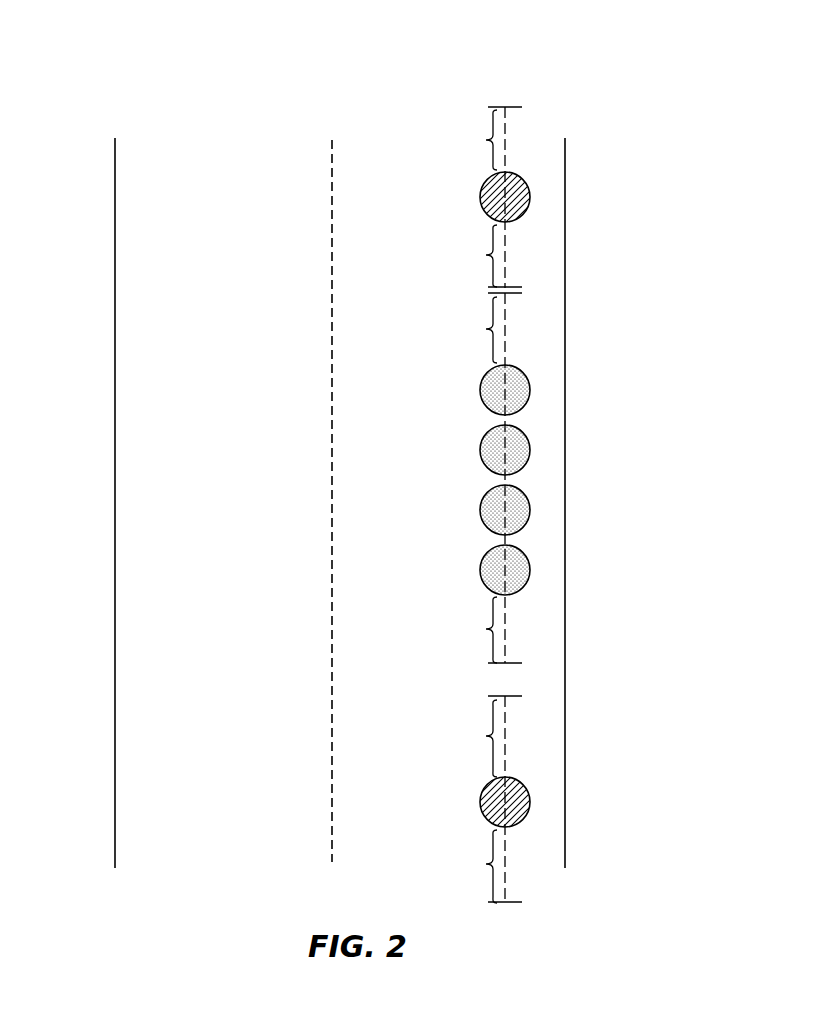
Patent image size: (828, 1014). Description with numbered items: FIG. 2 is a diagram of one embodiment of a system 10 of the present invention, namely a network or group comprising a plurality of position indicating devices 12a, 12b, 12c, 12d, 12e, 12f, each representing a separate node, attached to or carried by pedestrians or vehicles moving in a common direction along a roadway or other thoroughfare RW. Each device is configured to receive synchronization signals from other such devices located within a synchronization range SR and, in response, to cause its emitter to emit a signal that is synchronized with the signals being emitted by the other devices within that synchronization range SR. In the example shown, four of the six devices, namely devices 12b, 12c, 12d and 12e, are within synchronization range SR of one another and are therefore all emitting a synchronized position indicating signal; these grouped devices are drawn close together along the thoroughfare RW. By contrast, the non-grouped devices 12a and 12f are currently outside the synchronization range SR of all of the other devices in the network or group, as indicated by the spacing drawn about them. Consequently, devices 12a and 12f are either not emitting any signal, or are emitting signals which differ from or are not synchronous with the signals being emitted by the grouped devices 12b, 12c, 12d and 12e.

The system 10 is at (376, 475).
The position indicating device 12a is at (530, 197).
The position indicating device 12b is at (530, 390).
The position indicating device 12c is at (530, 450).
The position indicating device 12d is at (530, 510).
The position indicating device 12e is at (530, 570).
The position indicating device 12f is at (530, 802).
The roadway or other thoroughfare RW is at (131, 341).
The synchronization range SR is at (472, 506).